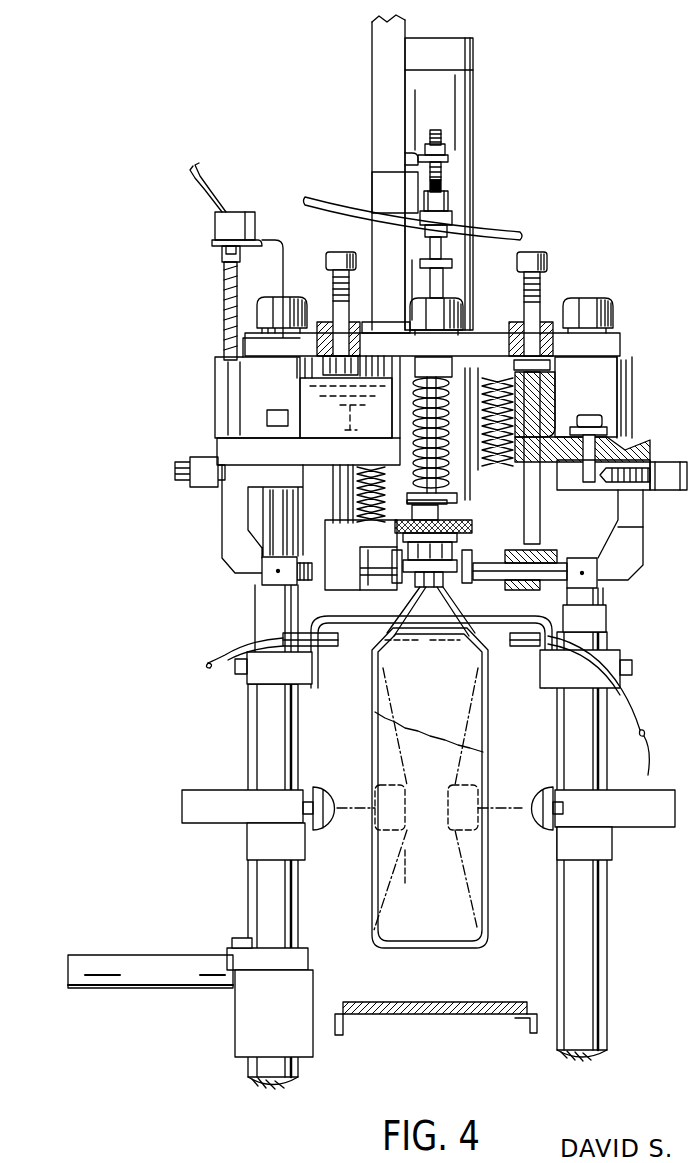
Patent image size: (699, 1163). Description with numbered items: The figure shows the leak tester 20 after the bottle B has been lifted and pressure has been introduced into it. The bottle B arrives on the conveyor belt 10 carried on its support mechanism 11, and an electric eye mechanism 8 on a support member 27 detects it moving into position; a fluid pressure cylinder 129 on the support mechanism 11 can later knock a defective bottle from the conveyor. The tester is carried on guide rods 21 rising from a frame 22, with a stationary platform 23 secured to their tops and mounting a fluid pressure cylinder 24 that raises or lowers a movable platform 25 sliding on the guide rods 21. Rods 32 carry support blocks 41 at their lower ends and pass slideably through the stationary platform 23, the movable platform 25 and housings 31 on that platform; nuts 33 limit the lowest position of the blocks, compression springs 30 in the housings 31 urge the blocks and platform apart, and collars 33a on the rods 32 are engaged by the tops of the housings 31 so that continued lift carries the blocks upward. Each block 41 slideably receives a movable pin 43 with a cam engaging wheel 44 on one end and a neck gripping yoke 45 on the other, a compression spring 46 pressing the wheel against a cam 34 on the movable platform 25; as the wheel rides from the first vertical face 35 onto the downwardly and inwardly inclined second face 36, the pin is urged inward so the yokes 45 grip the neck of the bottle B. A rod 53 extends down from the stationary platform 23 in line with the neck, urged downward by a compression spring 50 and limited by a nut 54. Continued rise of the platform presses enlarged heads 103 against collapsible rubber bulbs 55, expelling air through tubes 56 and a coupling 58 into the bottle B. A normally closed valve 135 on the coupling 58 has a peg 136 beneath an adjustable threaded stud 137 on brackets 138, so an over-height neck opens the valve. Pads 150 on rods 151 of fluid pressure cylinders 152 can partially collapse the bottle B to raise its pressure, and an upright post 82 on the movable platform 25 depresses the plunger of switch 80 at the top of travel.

The fluid pressure cylinder 24 is at (446, 106).
The threaded stud 137 is at (441, 132).
The brackets 138 is at (408, 160).
The normally closed valve 135 is at (428, 200).
The peg 136 is at (446, 192).
The leak tester 20 is at (505, 225).
The coupling 58 is at (452, 224).
The tubes 56 is at (517, 226).
The nuts 33 is at (335, 262).
The rods 32 is at (541, 295).
The nut 54 is at (425, 296).
The rod 53 is at (450, 293).
The stationary platform 23 is at (621, 346).
The collars 33a is at (543, 368).
The collapsible rubber bulbs 55 is at (323, 402).
The enlarged heads 103 is at (333, 450).
The compression spring 50 is at (418, 393).
The compression springs 30 is at (472, 410).
The housings 31 is at (552, 400).
The movable platform 25 is at (630, 452).
The cams 34 is at (614, 510).
The first vertical face 35 is at (620, 540).
The second face 36 is at (618, 552).
The support blocks 41 is at (328, 560).
The neck gripping yoke 45 is at (410, 590).
The movable pin 43 is at (478, 572).
The compression spring 46 is at (306, 562).
The cam engaging wheel 44 is at (264, 596).
The frame 22 is at (250, 1035).
The guide rods 21 is at (587, 955).
The fluid pressure cylinder 129 is at (163, 955).
The fluid pressure cylinders 152 is at (218, 815).
The pads 150 is at (318, 832).
The rods 151 is at (322, 786).
The bottle B is at (416, 899).
The support member 27 is at (314, 688).
The electric eye mechanism 8 is at (342, 647).
The conveyor belt 10 is at (490, 1003).
The support mechanism 11 is at (532, 1030).
The switch 80 is at (240, 214).
The upright post 82 is at (222, 262).